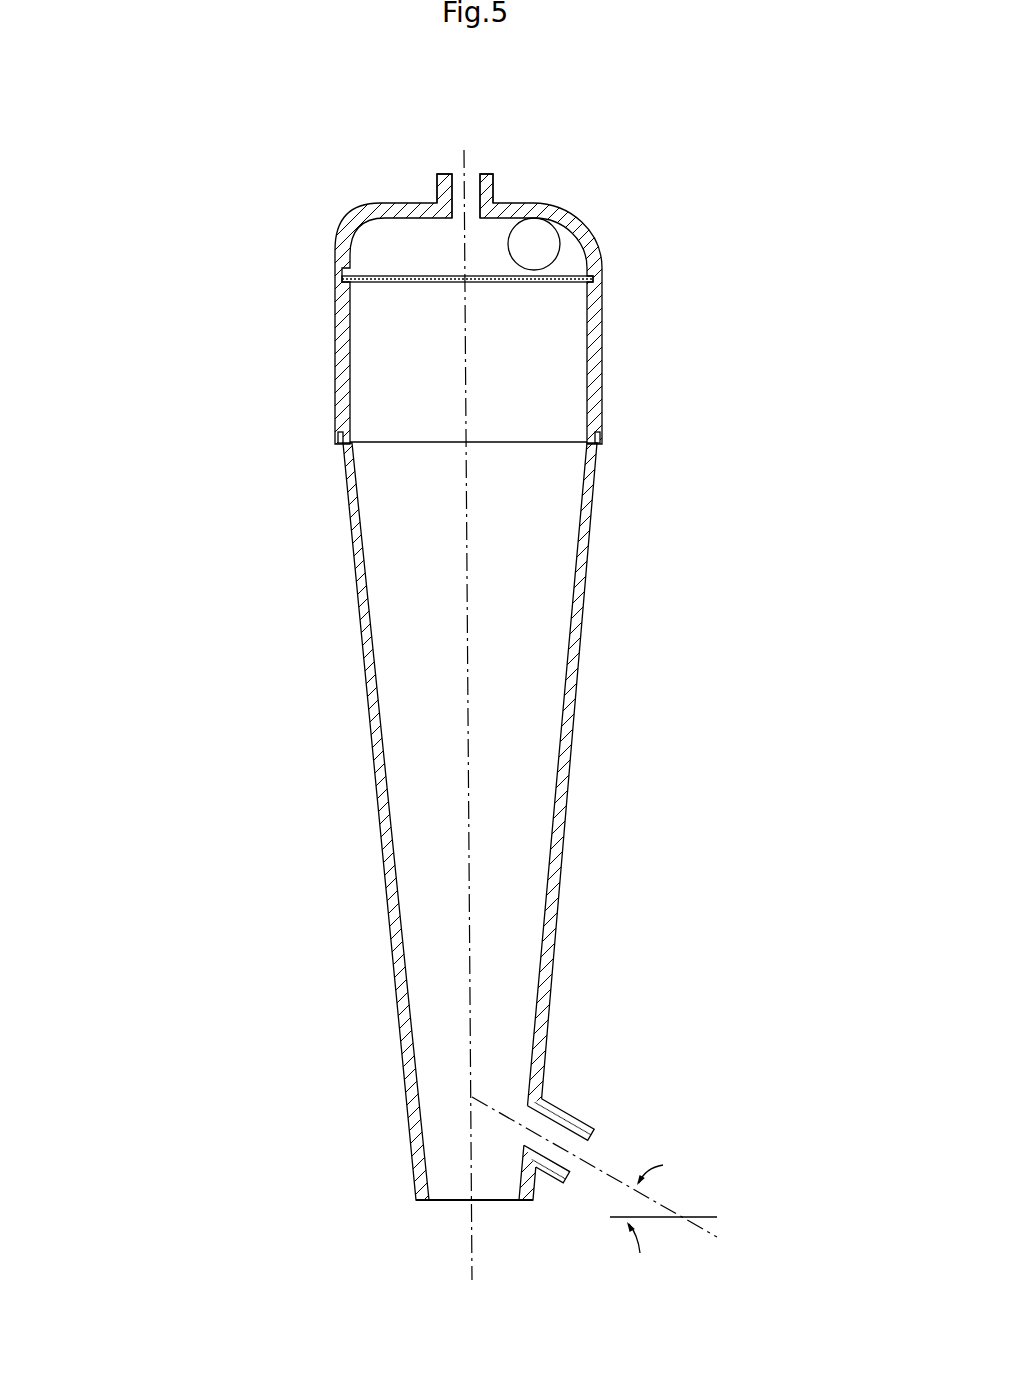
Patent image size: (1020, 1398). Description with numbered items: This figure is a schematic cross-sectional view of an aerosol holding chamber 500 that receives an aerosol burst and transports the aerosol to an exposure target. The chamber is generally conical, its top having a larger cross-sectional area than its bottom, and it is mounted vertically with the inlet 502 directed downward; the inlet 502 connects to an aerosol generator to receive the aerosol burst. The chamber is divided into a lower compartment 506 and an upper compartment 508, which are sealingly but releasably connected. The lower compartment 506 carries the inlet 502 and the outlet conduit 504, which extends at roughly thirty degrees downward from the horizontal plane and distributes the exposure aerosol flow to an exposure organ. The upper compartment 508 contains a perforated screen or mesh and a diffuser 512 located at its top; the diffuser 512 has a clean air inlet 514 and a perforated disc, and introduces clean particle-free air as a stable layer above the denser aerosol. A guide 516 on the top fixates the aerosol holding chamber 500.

The aerosol holding chamber 500 is at (245, 318).
The inlet 502 is at (452, 1200).
The outlet conduit 504 is at (562, 1110).
The lower compartment 506 is at (573, 713).
The upper compartment 508 is at (602, 362).
The diffuser 512 is at (428, 283).
The clean air inlet 514 is at (545, 243).
The guide 516 is at (495, 183).